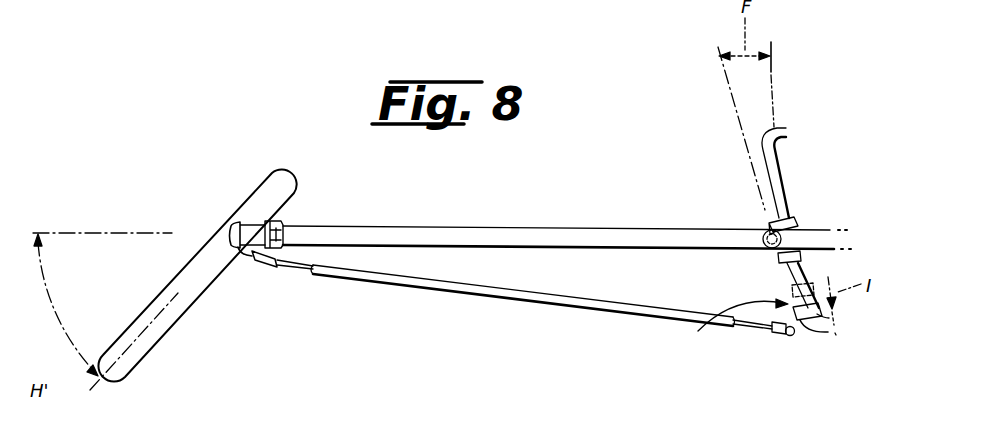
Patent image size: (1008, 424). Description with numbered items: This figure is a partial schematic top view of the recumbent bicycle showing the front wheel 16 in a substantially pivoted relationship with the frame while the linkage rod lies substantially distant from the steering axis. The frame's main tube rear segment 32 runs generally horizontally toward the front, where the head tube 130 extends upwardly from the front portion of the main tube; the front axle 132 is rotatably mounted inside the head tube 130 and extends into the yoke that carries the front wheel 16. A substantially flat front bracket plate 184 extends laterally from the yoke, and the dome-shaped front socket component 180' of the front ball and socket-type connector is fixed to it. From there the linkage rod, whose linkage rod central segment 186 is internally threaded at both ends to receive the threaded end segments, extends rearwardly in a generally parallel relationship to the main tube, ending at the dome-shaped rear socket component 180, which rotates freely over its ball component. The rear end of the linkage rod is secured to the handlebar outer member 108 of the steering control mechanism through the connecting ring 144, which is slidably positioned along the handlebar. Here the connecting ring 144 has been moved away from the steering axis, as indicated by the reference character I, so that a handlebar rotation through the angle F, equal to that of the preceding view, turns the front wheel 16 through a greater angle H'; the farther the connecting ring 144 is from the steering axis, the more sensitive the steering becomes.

The front wheel 16 is at (190, 321).
The main tube rear segment 32 is at (554, 238).
The handlebar outer member 108 is at (773, 173).
The head tube 130 is at (252, 233).
The front axle 132 is at (284, 238).
The connecting ring 144 is at (714, 325).
The rear socket component 180 is at (753, 353).
The front socket component 180' is at (295, 279).
The front bracket plate 184 is at (248, 262).
The linkage rod central segment 186 is at (538, 299).